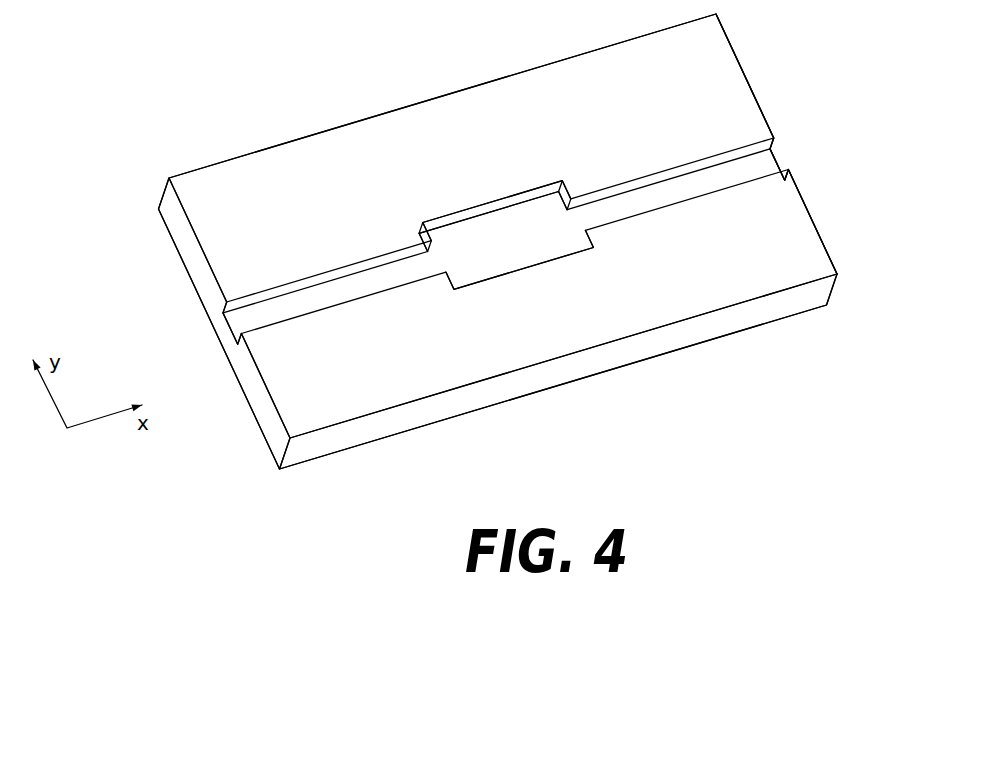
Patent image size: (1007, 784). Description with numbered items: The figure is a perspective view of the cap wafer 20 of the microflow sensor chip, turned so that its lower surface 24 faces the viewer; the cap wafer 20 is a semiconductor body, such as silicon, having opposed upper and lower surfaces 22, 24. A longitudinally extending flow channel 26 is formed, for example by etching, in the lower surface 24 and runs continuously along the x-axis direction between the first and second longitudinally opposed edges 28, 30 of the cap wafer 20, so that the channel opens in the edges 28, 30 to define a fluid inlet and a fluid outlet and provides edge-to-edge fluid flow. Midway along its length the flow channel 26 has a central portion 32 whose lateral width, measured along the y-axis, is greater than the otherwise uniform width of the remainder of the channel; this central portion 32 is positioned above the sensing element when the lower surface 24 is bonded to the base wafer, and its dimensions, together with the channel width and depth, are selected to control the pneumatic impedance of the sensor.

The cap wafer 20 is at (816, 201).
The upper surface of the cap wafer 22 is at (388, 438).
The lower surface of the cap wafer 24 is at (767, 272).
The longitudinally extending flow channel 26 is at (755, 163).
The first longitudinally opposed edge 28 is at (260, 412).
The second longitudinally opposed edge 30 is at (825, 246).
The central portion 32 is at (527, 226).